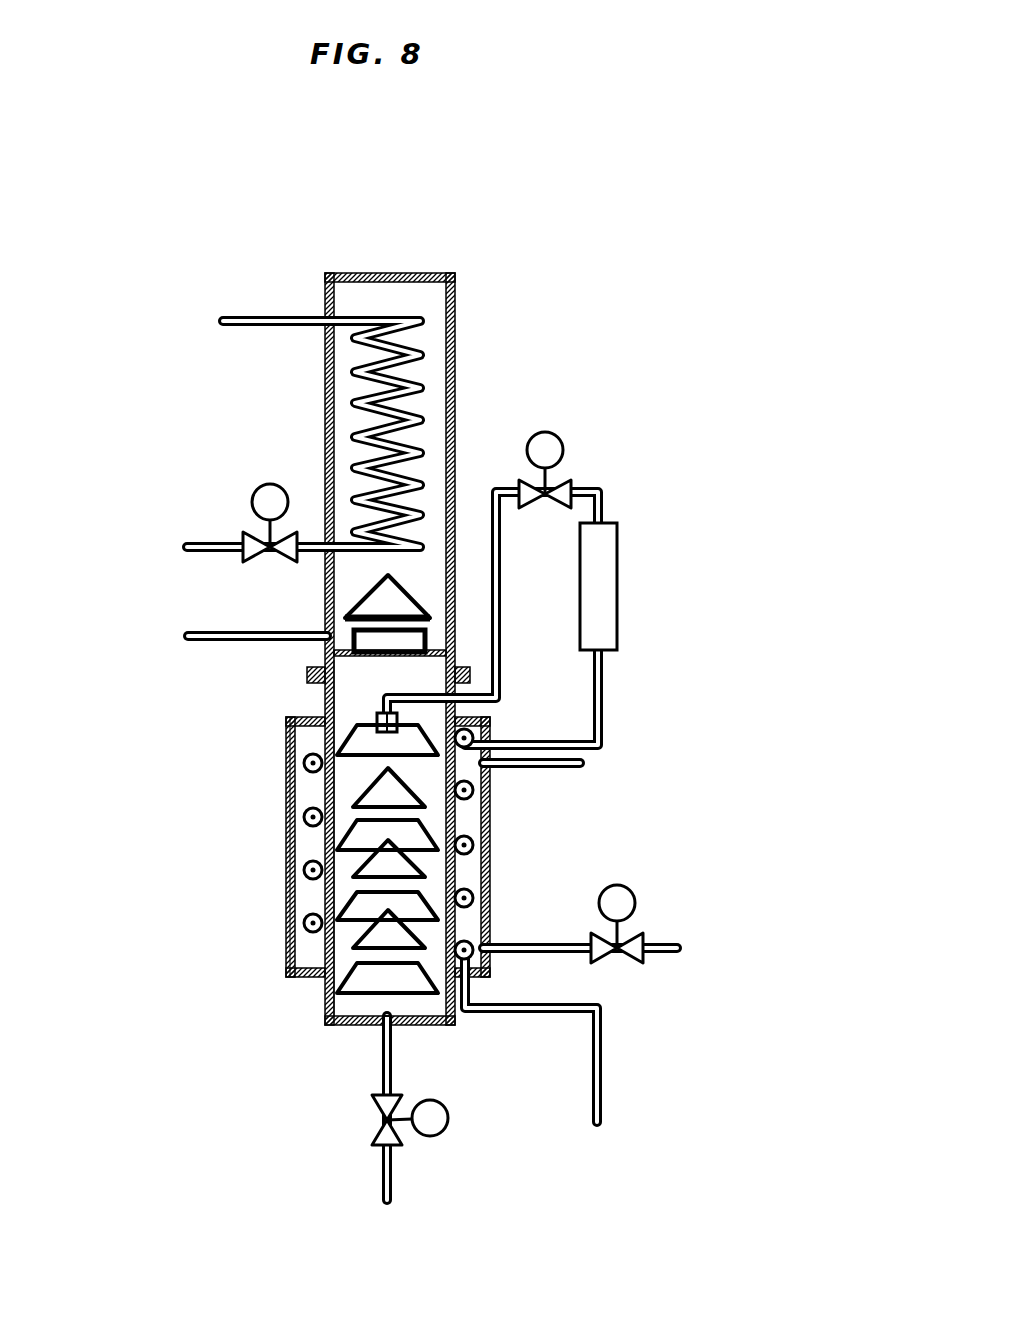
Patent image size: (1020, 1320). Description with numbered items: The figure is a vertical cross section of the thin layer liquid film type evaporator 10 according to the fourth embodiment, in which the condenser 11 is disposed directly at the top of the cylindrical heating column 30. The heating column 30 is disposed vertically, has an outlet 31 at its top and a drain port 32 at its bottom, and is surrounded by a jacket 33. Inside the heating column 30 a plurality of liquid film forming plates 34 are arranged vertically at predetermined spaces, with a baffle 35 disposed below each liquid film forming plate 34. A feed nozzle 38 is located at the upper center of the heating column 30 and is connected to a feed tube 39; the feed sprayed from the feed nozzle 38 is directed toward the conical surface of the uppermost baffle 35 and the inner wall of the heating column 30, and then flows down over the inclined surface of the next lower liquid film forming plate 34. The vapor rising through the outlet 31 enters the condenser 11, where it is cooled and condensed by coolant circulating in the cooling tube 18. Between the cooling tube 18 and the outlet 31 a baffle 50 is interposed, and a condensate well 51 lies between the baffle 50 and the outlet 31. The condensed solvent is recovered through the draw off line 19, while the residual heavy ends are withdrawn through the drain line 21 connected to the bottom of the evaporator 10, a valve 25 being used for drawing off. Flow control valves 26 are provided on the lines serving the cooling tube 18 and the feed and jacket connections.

The thin layer liquid film type evaporator 10 is at (500, 813).
The condenser 11 is at (464, 404).
The cooling tube 18 is at (355, 403).
The draw off line 19 is at (257, 660).
The drain line 21 is at (385, 1068).
The valve 25 is at (380, 1105).
The flow control valve 26 is at (252, 543).
The heating column 30 is at (328, 793).
The outlet 31 is at (437, 668).
The drain port 32 is at (385, 1030).
The jacket 33 is at (288, 841).
The liquid film forming plate 34 is at (340, 733).
The baffle 35 is at (428, 778).
The feed nozzle 38 is at (377, 722).
The feed tube 39 is at (305, 870).
The baffle 50 is at (367, 593).
The condensate well 51 is at (353, 638).